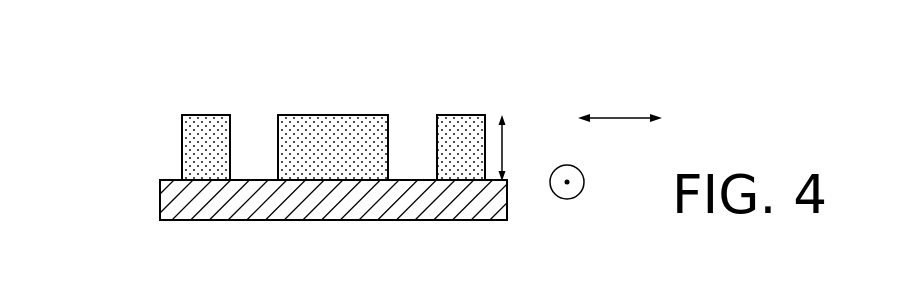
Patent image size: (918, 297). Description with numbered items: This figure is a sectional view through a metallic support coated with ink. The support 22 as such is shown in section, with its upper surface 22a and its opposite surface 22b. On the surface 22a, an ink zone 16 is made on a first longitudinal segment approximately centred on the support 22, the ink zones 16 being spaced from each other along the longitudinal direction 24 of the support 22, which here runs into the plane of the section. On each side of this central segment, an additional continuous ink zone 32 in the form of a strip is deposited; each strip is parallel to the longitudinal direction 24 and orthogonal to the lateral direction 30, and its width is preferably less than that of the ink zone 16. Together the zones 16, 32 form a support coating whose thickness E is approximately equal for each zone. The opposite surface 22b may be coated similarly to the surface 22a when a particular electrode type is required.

The ink zone 16 is at (307, 122).
The support 22 is at (172, 200).
The surface 22a is at (170, 180).
The opposite surface 22b is at (177, 223).
The longitudinal direction 24 is at (568, 181).
The lateral direction 30 is at (623, 118).
The additional continuous ink zone 32 is at (202, 123).
The thickness E is at (502, 158).